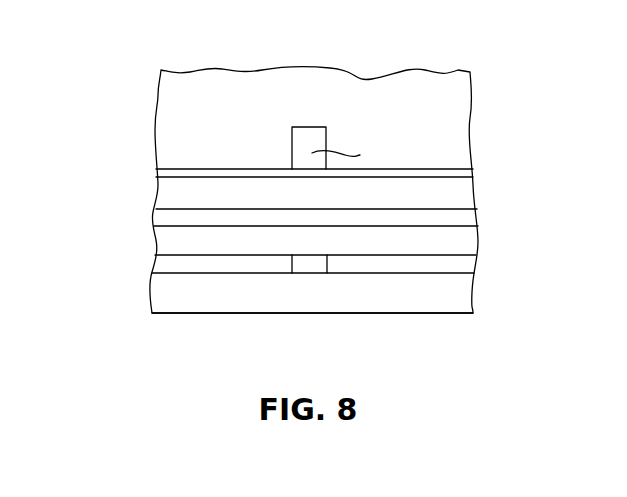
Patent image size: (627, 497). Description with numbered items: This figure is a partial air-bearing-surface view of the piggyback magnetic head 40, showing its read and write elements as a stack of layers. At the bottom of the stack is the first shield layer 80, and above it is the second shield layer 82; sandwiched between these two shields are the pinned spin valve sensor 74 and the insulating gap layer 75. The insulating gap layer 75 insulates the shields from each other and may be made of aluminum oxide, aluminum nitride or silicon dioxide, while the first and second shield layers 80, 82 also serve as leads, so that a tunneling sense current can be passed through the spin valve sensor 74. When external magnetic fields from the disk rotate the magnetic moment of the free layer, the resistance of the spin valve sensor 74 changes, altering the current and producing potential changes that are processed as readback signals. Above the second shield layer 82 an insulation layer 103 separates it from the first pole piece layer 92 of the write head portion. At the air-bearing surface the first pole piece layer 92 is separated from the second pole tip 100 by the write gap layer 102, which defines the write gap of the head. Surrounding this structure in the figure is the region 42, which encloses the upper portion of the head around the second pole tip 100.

The piggyback magnetic head 40 is at (492, 85).
The upper dielectric layer 42 is at (161, 98).
The write gap layer 102 is at (228, 171).
The first pole piece layer 92 is at (160, 194).
The insulation layer 103 is at (463, 220).
The second shield layer 82 is at (160, 242).
The insulating gap layer 75 is at (217, 265).
The pinned spin valve sensor 74 is at (306, 265).
The first shield layer 80 is at (463, 296).
The second pole tip 100 is at (305, 135).